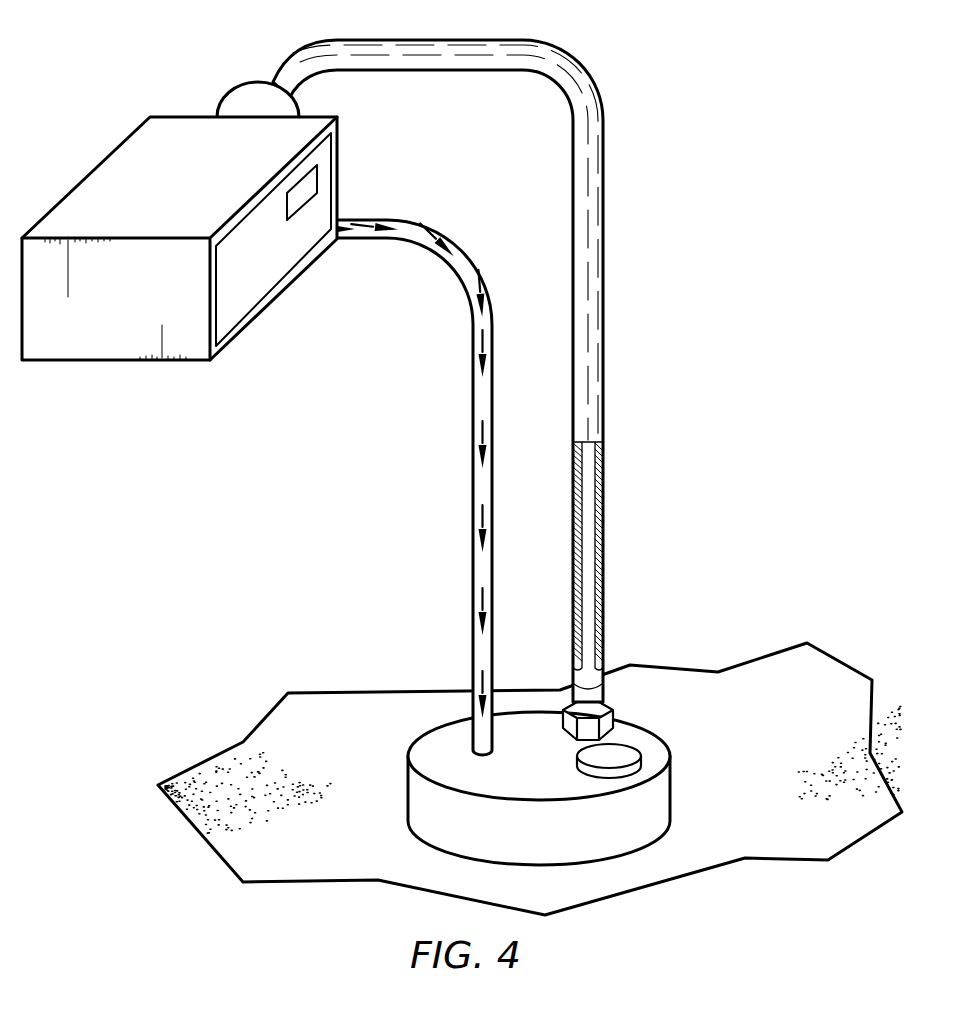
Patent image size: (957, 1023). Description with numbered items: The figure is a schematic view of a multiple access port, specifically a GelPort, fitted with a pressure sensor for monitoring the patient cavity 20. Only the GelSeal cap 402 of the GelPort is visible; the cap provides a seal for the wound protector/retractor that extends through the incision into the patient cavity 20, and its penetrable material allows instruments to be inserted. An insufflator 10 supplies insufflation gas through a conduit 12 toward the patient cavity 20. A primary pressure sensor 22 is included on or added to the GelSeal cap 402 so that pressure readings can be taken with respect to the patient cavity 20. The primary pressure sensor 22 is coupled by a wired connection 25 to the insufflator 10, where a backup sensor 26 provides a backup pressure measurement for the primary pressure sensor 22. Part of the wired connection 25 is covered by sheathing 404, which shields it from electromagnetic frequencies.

The insufflator 10 is at (179, 207).
The conduit 12 is at (473, 407).
The patient cavity 20 is at (793, 831).
The primary pressure sensor 22 is at (577, 758).
The wired connection 25 is at (478, 371).
The backup sensor 26 is at (236, 97).
The GelSeal cap 402 is at (672, 782).
The sheathing 404 is at (573, 485).